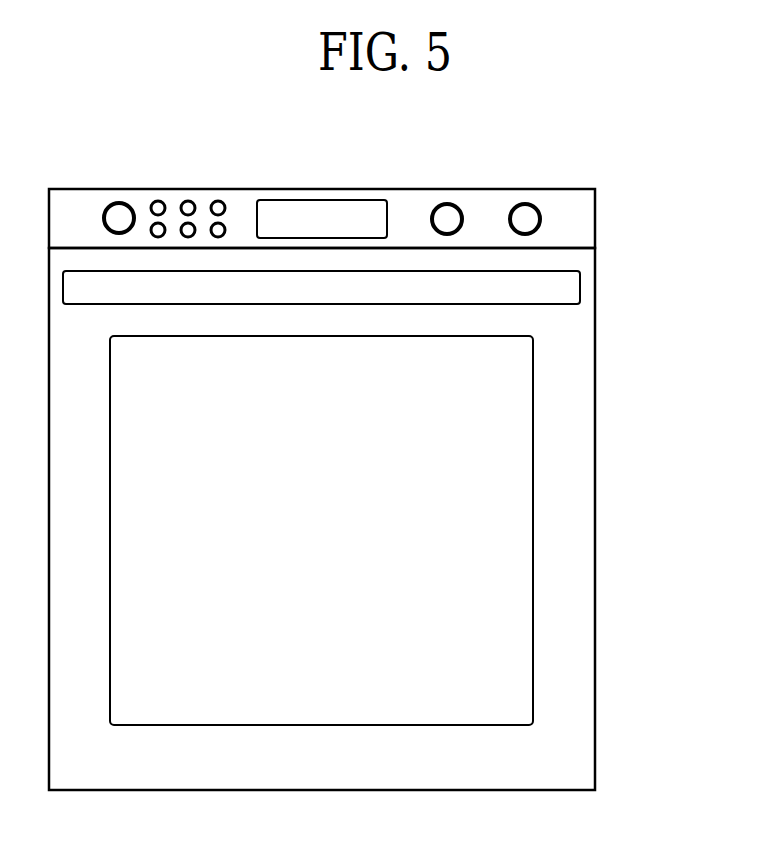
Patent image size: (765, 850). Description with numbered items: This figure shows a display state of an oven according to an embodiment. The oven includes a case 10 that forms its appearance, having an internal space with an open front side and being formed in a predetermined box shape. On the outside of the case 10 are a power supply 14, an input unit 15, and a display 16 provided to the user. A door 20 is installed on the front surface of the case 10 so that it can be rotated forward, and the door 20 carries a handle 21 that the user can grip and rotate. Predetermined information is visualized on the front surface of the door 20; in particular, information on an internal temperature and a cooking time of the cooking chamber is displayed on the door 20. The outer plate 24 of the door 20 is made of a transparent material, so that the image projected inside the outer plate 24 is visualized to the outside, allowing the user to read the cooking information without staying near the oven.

The case 10 is at (551, 189).
The power supply 14 is at (119, 210).
The input unit 15 is at (157, 207).
The display 16 is at (333, 208).
The door 20 is at (580, 398).
The handle 21 is at (575, 285).
The outer plate 24 is at (525, 482).